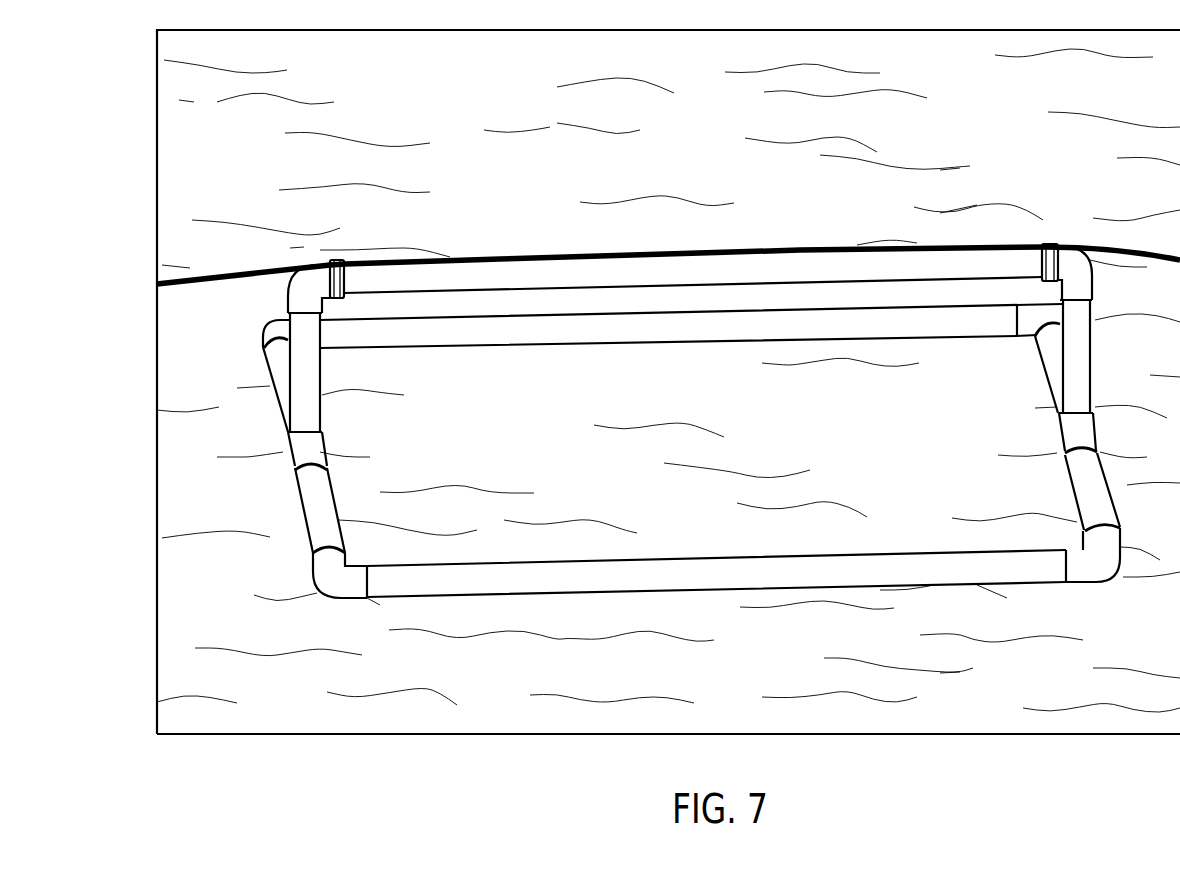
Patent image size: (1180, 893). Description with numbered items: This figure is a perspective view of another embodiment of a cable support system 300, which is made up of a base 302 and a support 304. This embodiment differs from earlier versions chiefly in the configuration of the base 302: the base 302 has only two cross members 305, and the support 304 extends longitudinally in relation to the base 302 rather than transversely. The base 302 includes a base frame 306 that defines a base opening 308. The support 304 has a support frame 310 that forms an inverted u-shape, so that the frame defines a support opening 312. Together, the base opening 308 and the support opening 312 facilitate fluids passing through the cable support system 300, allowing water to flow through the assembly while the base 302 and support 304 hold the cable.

The cable support system 300 is at (512, 185).
The base 302 is at (858, 568).
The support 304 is at (740, 265).
The cross members 305 is at (528, 335).
The base frame 306 is at (310, 512).
The base opening 308 is at (735, 412).
The support frame 310 is at (300, 378).
The support opening 312 is at (923, 468).